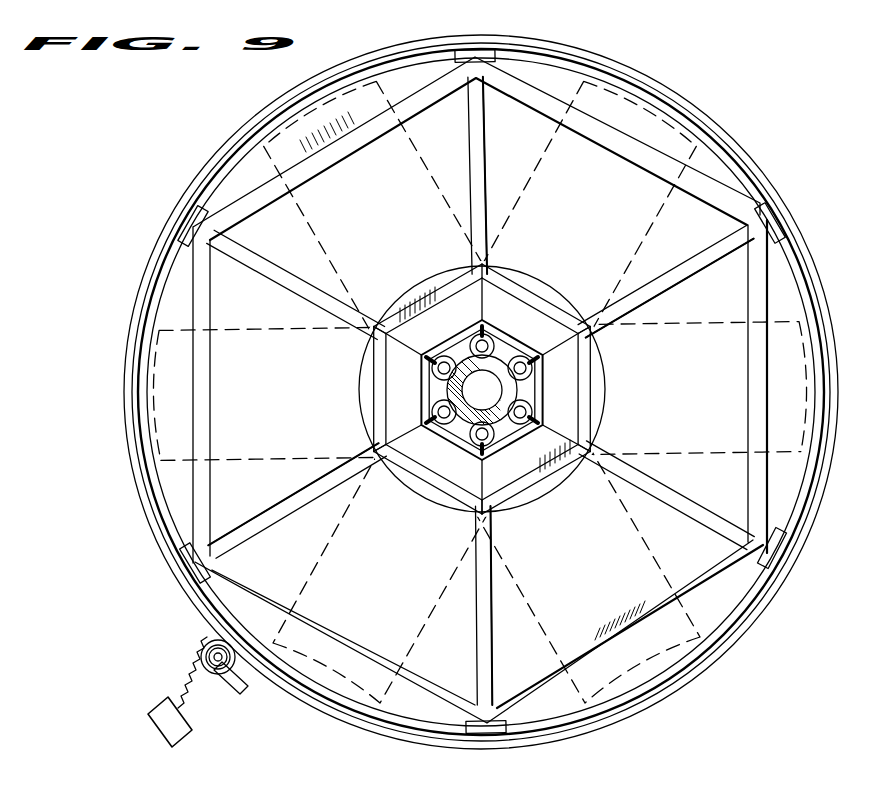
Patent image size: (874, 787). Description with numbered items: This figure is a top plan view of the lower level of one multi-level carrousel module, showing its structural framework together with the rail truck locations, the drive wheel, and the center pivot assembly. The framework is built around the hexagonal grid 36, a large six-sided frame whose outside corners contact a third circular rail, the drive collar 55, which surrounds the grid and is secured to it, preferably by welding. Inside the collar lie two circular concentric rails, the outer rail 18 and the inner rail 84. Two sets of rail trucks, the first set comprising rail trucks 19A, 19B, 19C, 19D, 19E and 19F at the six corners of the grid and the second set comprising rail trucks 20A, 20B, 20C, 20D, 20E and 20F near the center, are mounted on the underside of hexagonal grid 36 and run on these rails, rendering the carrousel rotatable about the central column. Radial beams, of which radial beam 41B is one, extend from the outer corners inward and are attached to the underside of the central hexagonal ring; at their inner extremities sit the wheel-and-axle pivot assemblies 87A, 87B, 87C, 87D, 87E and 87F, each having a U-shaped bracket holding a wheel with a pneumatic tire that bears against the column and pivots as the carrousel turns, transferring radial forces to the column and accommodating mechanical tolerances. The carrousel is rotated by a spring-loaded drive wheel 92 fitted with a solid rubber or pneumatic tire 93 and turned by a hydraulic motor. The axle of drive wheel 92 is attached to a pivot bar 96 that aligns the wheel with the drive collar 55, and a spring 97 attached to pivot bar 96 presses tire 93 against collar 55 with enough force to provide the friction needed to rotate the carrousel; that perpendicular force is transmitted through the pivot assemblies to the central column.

The circular rail 18 is at (149, 483).
The rail truck 19A is at (208, 583).
The rail truck 19B is at (512, 724).
The rail truck 19C is at (786, 528).
The rail truck 19D is at (784, 222).
The rail truck 19E is at (501, 56).
The rail truck 19F is at (204, 207).
The rail truck 20A is at (386, 456).
The rail truck 20B is at (484, 512).
The rail truck 20C is at (588, 454).
The rail truck 20D is at (592, 344).
The rail truck 20E is at (490, 272).
The rail truck 20F is at (384, 322).
The hexagonal grid 36 is at (751, 426).
The radial beam 41B is at (306, 518).
The drive collar 55 is at (142, 514).
The circular rail 84 is at (572, 306).
The wheel-and-axle pivot assembly 87A is at (432, 408).
The wheel-and-axle pivot assembly 87B is at (474, 442).
The wheel-and-axle pivot assembly 87C is at (522, 428).
The wheel-and-axle pivot assembly 87D is at (528, 372).
The wheel-and-axle pivot assembly 87E is at (500, 354).
The wheel-and-axle pivot assembly 87F is at (440, 358).
The drive wheel 92 is at (220, 644).
The tire 93 is at (206, 659).
The pivot bar 96 is at (244, 694).
The spring 97 is at (227, 698).